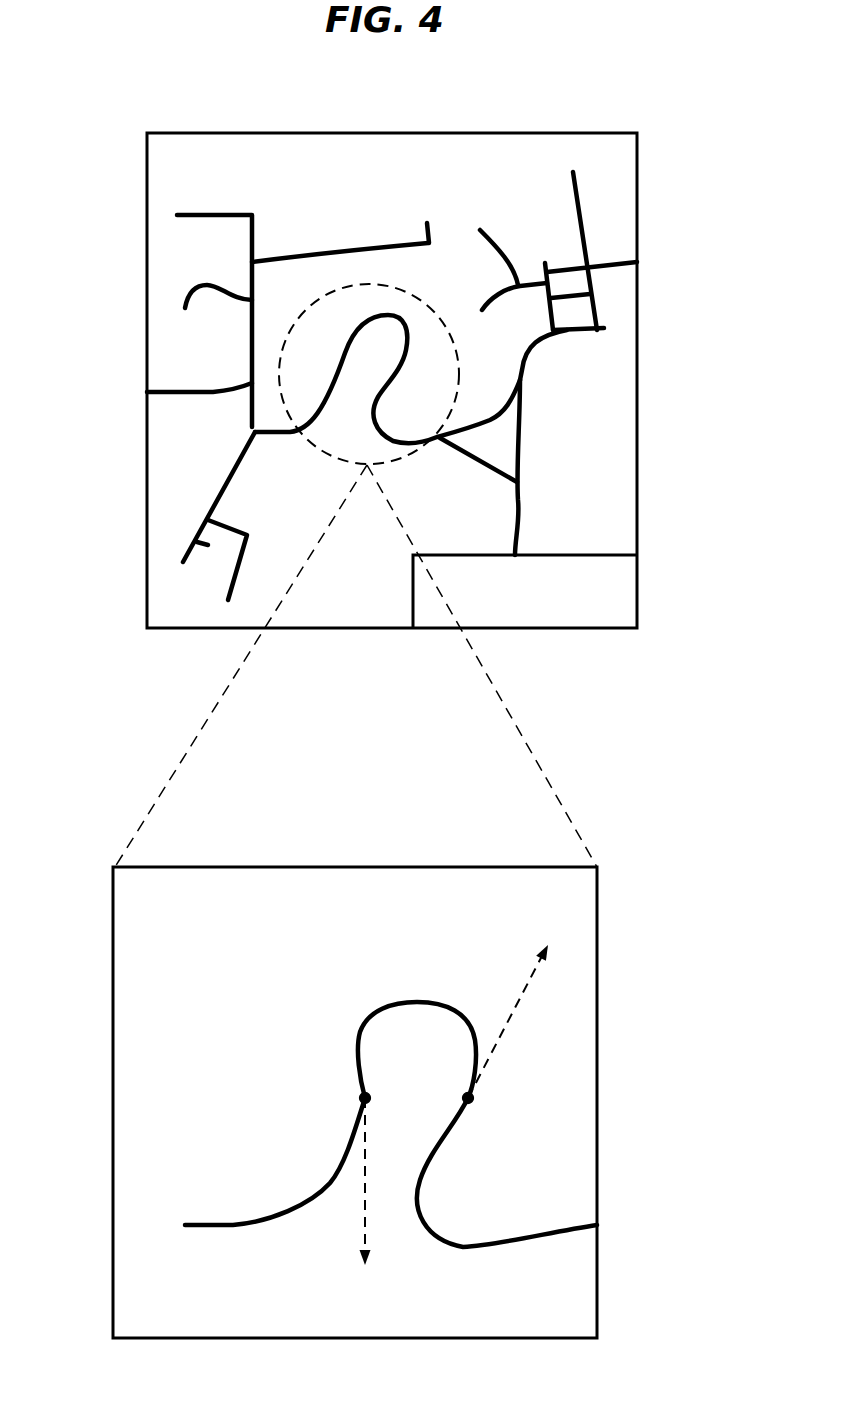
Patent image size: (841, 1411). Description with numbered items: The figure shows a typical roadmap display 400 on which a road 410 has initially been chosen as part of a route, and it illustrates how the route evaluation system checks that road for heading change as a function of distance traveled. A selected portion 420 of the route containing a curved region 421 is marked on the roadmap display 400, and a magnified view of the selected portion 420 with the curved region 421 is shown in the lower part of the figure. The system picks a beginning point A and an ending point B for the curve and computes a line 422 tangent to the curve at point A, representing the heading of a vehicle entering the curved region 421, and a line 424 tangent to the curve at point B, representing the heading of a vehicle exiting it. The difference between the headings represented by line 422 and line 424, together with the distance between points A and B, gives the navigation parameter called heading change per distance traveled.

The roadmap display 400 is at (127, 116).
The road 410 is at (275, 427).
The selected portion 420 is at (431, 296).
The curved region 421 is at (400, 986).
The line 422 is at (524, 1000).
The line 424 is at (360, 1218).